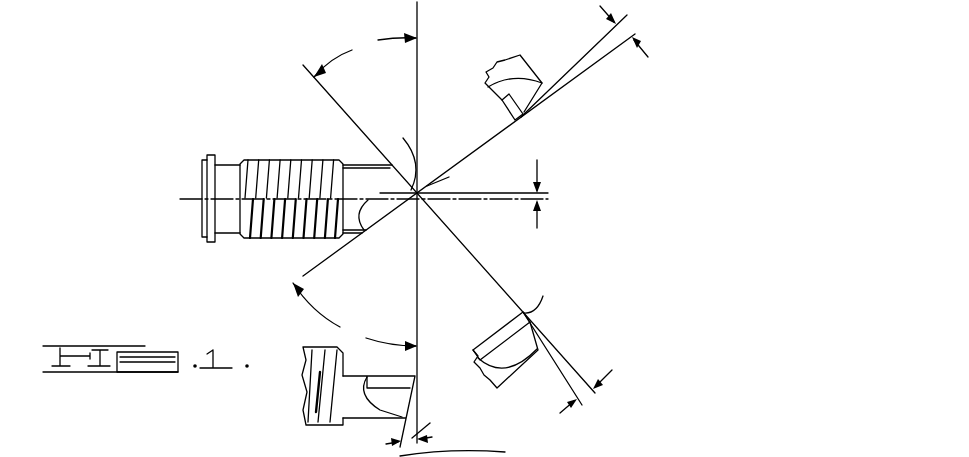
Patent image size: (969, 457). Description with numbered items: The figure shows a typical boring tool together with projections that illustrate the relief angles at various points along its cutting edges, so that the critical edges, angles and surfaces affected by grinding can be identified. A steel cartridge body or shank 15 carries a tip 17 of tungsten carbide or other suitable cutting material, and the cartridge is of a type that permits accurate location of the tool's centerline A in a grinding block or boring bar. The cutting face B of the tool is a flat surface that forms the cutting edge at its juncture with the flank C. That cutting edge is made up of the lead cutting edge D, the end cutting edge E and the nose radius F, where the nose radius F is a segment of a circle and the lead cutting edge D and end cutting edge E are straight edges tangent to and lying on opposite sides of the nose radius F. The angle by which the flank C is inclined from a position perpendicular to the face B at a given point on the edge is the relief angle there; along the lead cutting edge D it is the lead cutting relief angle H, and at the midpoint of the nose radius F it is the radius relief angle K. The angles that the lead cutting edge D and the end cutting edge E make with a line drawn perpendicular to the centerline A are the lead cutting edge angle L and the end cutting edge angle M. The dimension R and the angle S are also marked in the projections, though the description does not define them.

The cartridge body or shank 15 is at (300, 141).
The tip 17 is at (384, 212).
The centerline A is at (352, 196).
The cutting face B is at (510, 116).
The flank C is at (502, 100).
The lead cutting edge D is at (553, 126).
The end cutting edge E is at (469, 220).
The nose radius F is at (446, 178).
The lead cutting relief angle H is at (584, 61).
The radius relief angle K is at (415, 426).
The lead cutting edge angle L is at (355, 317).
The end cutting edge angle M is at (449, 213).
The offset R is at (549, 194).
The angle S is at (567, 364).